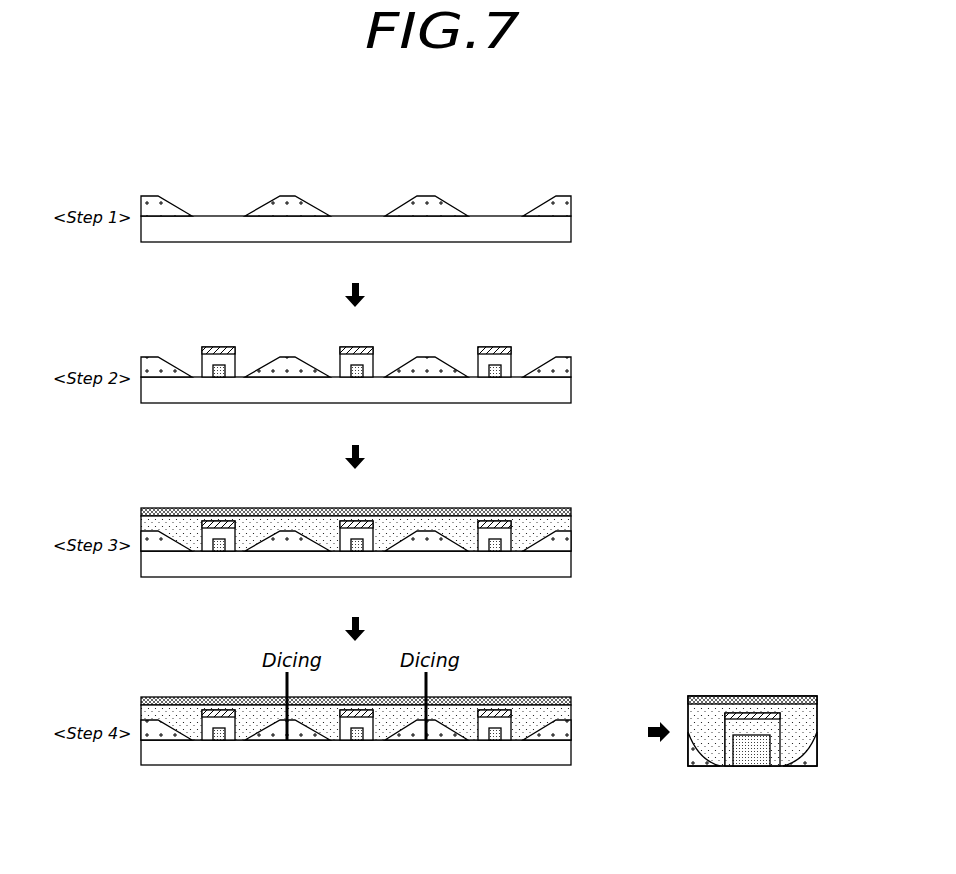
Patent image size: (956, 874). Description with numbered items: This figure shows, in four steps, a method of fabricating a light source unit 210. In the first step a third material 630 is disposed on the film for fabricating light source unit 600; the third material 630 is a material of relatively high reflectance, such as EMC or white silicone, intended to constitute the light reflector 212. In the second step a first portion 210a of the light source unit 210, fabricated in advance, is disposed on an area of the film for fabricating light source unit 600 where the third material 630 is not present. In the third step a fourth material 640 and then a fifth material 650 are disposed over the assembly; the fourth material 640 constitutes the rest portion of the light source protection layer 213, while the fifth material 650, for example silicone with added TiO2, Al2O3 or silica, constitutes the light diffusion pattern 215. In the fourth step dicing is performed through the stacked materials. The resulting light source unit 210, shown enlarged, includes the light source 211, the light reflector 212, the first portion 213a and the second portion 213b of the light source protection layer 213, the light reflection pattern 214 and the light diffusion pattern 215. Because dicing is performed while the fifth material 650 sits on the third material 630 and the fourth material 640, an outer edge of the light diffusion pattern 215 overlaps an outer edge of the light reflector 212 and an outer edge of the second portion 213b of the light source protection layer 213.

The film for fabricating light source unit 600 is at (571, 234).
The third material 630 is at (562, 207).
The fourth material 640 is at (565, 525).
The fifth material 650 is at (571, 511).
The first portion of the light source unit 210a is at (204, 340).
The light source unit 210 is at (734, 746).
The light source 211 is at (760, 748).
The light reflector 212 is at (795, 769).
The light source protection layer 213 is at (738, 760).
The first portion of the light source protection layer 213a is at (728, 760).
The second portion of the light source protection layer 213b is at (708, 740).
The light reflection pattern 214 is at (752, 714).
The light diffusion pattern 215 is at (704, 698).